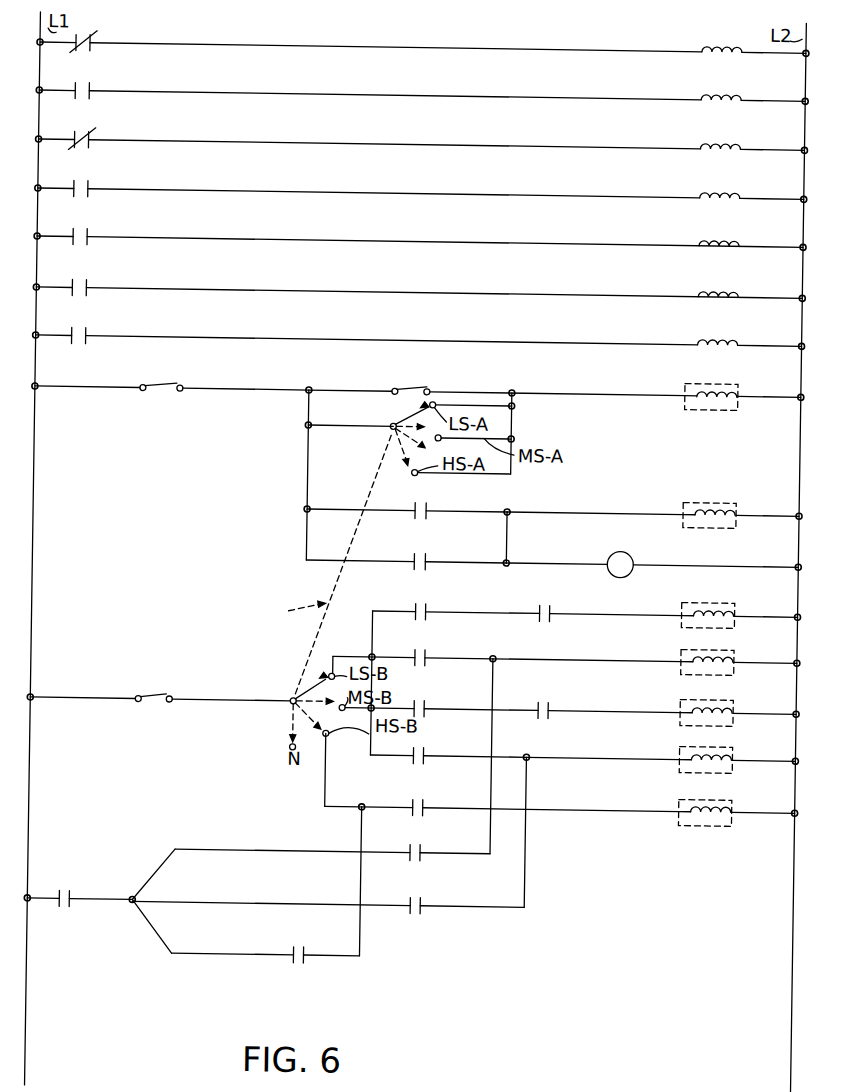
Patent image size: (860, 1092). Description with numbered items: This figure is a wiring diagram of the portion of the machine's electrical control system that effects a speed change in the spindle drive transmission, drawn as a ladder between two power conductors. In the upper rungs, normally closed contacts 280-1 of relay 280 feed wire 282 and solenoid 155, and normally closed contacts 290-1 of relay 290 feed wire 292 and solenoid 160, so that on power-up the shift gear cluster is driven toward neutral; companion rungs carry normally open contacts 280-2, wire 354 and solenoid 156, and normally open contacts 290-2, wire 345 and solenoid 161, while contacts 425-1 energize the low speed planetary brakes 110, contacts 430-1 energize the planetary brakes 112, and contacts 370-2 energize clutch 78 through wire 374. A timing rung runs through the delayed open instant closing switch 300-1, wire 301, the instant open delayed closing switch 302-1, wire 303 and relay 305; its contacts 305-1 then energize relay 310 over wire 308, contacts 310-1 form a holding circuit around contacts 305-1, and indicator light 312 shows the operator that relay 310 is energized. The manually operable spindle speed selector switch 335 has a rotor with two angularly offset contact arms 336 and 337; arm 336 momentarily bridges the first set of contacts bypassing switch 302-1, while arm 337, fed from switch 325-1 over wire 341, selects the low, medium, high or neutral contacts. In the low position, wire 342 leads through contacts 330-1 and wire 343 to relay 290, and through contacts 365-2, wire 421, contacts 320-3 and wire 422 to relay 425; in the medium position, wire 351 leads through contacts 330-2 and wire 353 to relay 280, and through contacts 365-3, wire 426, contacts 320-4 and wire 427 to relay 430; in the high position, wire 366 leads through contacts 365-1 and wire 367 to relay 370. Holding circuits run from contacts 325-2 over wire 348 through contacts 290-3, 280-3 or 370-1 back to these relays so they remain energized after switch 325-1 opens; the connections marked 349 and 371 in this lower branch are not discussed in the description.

The normally closed contacts 280-1 is at (84, 40).
The wire 282 is at (260, 44).
The solenoid 155 is at (728, 40).
The normally open contacts 280-2 is at (88, 90).
The wire 354 is at (261, 91).
The solenoid 156 is at (728, 88).
The normally closed contacts 290-1 is at (91, 139).
The wire 292 is at (260, 140).
The solenoid 160 is at (728, 137).
The normally open contacts 290-2 is at (88, 188).
The wire 345 is at (265, 190).
The solenoid 161 is at (726, 186).
The normally open contacts 425-1 is at (89, 236).
The low speed planetary brakes 110 is at (728, 234).
The normally open contacts 430-1 is at (89, 286).
The planetary brakes 112 is at (728, 285).
The contacts 370-2 is at (89, 335).
The wire 374 is at (512, 334).
The clutch 78 is at (712, 334).
The delayed open instant closing switch 300-1 is at (168, 382).
The wire 301 is at (246, 384).
The instant open delayed closing switch 302-1 is at (430, 372).
The wire 303 is at (618, 382).
The relay 305 is at (724, 376).
The contact arm 336 is at (392, 404).
The normally open contacts 305-1 is at (432, 506).
The wire 308 is at (602, 506).
The relay 310 is at (712, 498).
The normally open contacts 310-1 is at (434, 546).
The indicator light 312 is at (643, 551).
The normally open contacts 365-2 is at (430, 600).
The contacts 320-3 is at (546, 600).
The wire 422 is at (645, 604).
The relay 425 is at (724, 600).
The spindle speed selector switch 335 is at (333, 565).
The wire 342 is at (372, 634).
The contacts 330-1 is at (431, 646).
The wire 421 is at (507, 642).
The wire 343 is at (618, 650).
The relay 290 is at (725, 648).
The delayed open instant close switch 325-1 is at (160, 696).
The contact arm 337 is at (298, 690).
The contacts 365-3 is at (432, 696).
The contacts 320-4 is at (551, 697).
The relay 430 is at (722, 698).
The wire 341 is at (244, 702).
The contacts 330-2 is at (432, 744).
The wire 426 is at (522, 815).
The wire 427 is at (651, 707).
The relay 280 is at (722, 744).
The wire 351 is at (380, 750).
The contacts 365-1 is at (431, 794).
The wire 353 is at (600, 754).
The relay 370 is at (719, 796).
The wire 366 is at (334, 786).
The normally open contacts 290-3 is at (430, 838).
The wire 367 is at (598, 806).
The conductor 349 is at (504, 848).
The contacts 325-2 is at (82, 888).
The normally open contacts 280-3 is at (427, 902).
The wire 348 is at (112, 900).
The contacts 370-1 is at (312, 942).
The conductor 371 is at (373, 934).